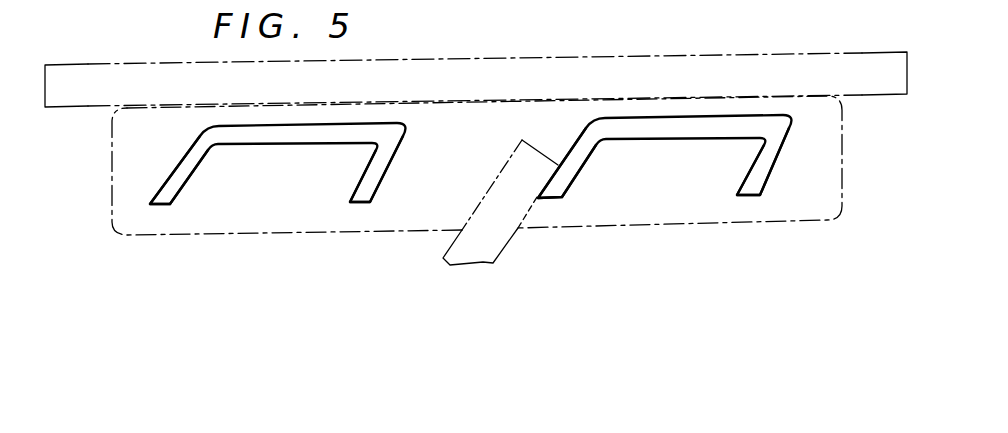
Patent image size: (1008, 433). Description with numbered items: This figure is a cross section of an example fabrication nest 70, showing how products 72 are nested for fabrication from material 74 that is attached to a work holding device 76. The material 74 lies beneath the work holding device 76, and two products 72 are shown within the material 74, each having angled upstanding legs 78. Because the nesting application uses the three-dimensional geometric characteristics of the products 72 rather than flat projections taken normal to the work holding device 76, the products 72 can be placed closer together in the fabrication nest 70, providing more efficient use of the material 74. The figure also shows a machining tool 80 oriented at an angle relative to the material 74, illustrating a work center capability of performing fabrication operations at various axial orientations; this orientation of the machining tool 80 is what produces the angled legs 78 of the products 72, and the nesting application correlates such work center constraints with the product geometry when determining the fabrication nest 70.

The fabrication nest 70 is at (623, 276).
The product 72 is at (296, 146).
The material 74 is at (255, 234).
The work holding device 76 is at (470, 58).
The angled upstanding legs 78 is at (194, 172).
The machining tool 80 is at (527, 142).